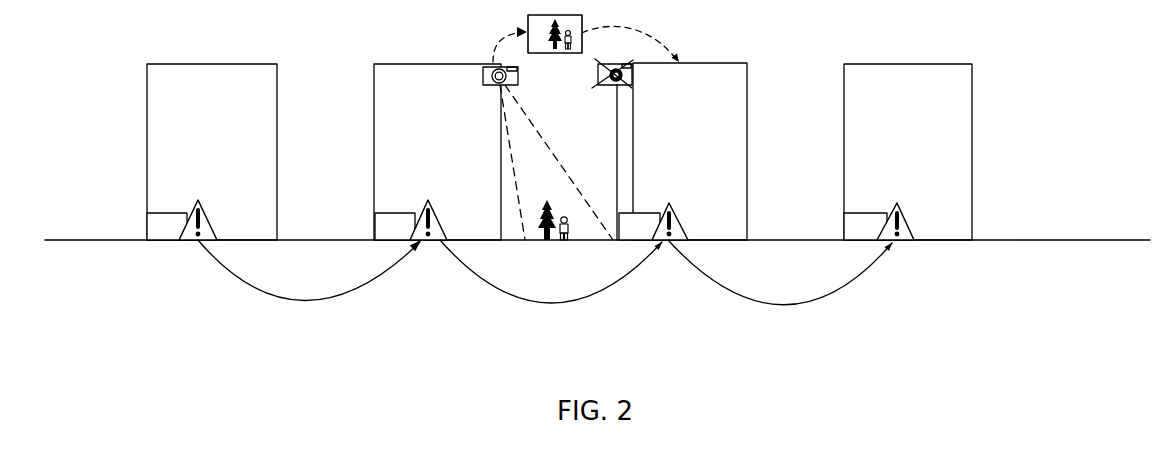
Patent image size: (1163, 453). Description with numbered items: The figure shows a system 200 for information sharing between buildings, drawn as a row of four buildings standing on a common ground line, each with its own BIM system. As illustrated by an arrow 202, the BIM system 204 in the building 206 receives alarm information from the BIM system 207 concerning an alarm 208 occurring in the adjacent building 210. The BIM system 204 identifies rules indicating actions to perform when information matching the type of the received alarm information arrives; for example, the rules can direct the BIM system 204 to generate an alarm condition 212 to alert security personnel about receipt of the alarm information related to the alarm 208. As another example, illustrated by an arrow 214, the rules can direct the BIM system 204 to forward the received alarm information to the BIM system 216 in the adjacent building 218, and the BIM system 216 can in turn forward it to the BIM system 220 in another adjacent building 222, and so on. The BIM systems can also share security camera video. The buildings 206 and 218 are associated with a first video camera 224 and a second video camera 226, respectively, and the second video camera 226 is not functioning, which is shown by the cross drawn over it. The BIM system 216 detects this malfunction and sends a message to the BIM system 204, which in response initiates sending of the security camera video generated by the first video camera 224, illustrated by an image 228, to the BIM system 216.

The system 200 is at (105, 392).
The arrow 202 is at (238, 278).
The BIM system 204 is at (375, 224).
The building 206 is at (374, 182).
The BIM system 207 is at (147, 222).
The alarm 208 is at (207, 213).
The adjacent building 210 is at (147, 150).
The alarm condition 212 is at (442, 213).
The arrow 214 is at (487, 285).
The BIM system 216 is at (630, 213).
The adjacent building 218 is at (747, 165).
The BIM system 220 is at (844, 225).
The adjacent building 222 is at (844, 194).
The first video camera 224 is at (518, 70).
The second video camera 226 is at (612, 87).
The image 228 is at (527, 22).